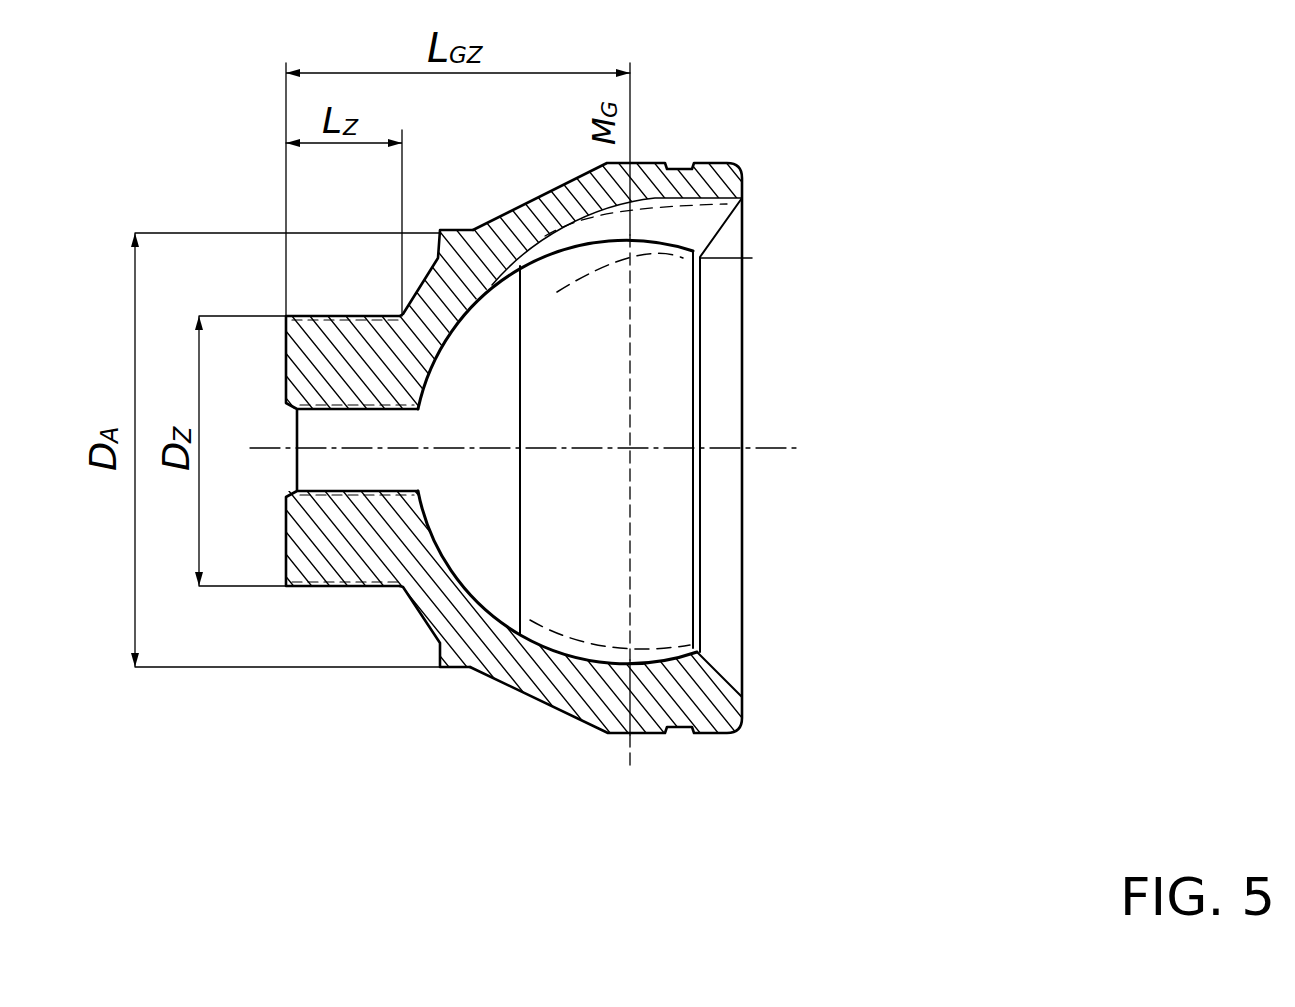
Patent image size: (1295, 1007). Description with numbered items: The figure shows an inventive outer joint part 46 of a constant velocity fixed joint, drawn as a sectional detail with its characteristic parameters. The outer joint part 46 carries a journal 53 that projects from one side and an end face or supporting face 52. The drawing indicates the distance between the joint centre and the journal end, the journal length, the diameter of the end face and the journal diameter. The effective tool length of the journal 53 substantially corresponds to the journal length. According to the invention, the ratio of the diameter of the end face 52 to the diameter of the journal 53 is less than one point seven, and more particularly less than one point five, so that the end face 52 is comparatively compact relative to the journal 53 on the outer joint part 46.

The outer joint part 46 is at (680, 150).
The end face or supporting face 52 is at (437, 653).
The journal 53 is at (328, 558).